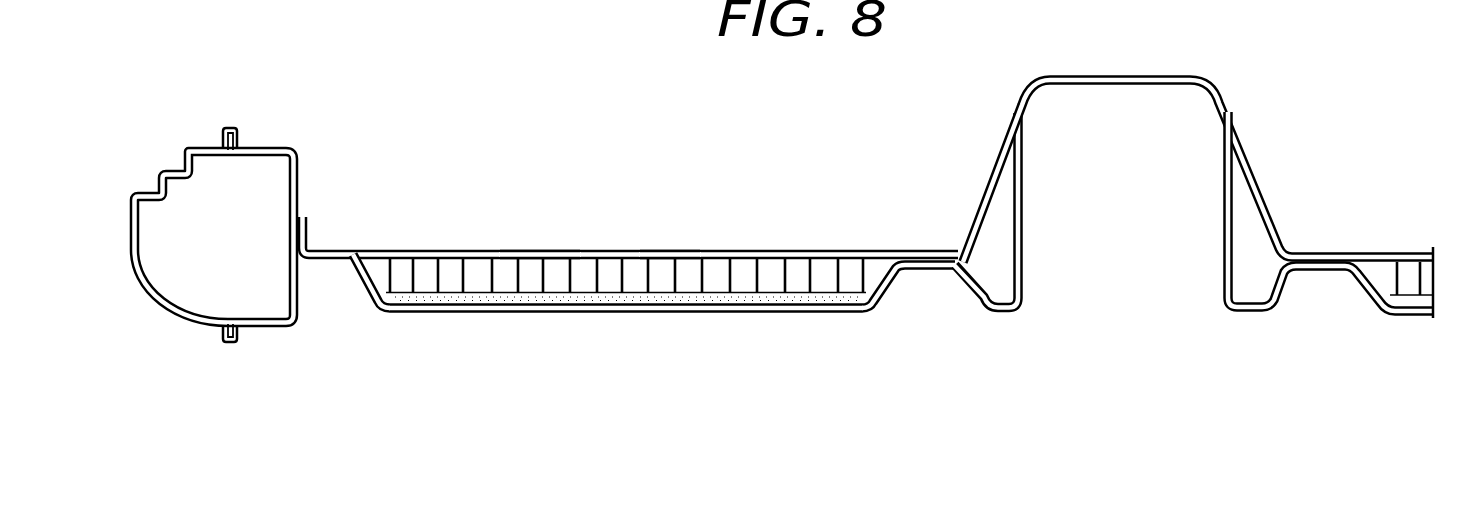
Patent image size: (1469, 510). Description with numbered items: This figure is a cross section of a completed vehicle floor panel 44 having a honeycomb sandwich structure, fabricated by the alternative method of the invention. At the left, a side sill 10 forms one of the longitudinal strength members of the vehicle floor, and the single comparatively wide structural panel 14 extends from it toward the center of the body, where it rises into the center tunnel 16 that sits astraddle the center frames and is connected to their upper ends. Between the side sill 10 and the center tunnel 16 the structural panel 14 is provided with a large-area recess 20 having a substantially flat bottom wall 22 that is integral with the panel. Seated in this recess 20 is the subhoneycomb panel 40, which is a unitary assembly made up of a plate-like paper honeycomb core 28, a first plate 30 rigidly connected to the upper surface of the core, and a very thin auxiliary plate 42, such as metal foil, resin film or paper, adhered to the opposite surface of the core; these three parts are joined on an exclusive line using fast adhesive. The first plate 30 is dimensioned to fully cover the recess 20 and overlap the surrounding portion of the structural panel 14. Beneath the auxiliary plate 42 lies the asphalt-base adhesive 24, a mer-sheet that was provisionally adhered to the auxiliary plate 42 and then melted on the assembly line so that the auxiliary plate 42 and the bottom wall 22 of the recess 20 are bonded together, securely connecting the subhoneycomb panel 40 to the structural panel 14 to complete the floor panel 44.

The side sill 10 is at (227, 117).
The structural panel 14 is at (987, 195).
The center tunnel 16 is at (1125, 73).
The recess 20 is at (383, 316).
The bottom wall 22 is at (643, 314).
The asphalt-base adhesive 24 is at (737, 304).
The honeycomb core 28 is at (613, 277).
The first plate 30 is at (675, 250).
The subhoneycomb panel 40 is at (765, 250).
The auxiliary plate 42 is at (533, 294).
The floor panel 44 is at (541, 203).